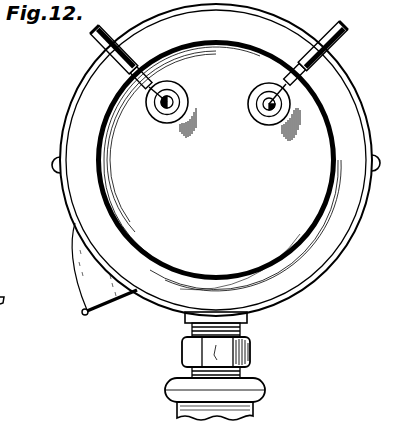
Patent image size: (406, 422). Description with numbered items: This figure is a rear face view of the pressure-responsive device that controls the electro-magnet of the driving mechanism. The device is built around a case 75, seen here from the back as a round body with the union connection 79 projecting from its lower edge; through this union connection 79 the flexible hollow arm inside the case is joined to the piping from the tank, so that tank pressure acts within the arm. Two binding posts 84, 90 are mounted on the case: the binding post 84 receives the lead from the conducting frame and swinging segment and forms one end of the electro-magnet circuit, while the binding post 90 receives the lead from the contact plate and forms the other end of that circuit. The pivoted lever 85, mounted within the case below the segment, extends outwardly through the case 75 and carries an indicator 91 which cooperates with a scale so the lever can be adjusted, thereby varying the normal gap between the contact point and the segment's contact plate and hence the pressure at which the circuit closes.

The case 75 is at (220, 167).
The union connection 79 is at (250, 352).
The binding post 84 is at (268, 106).
The pivoted lever 85 is at (86, 316).
The binding post 90 is at (168, 100).
The indicator 91 is at (82, 311).